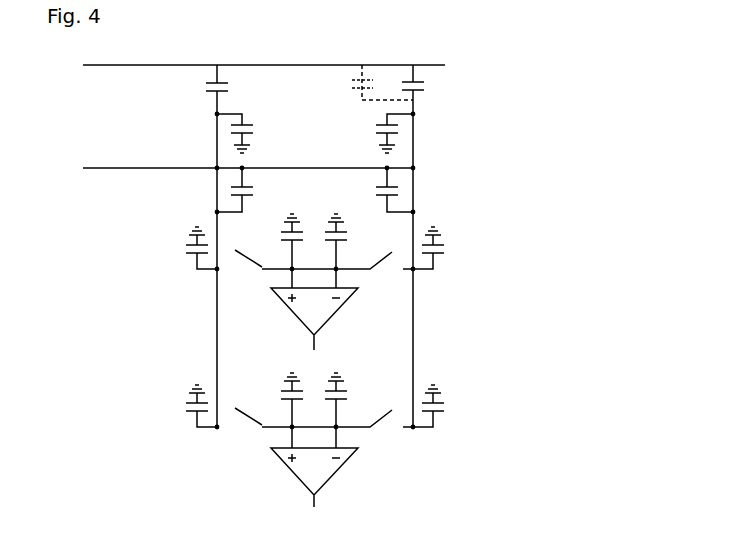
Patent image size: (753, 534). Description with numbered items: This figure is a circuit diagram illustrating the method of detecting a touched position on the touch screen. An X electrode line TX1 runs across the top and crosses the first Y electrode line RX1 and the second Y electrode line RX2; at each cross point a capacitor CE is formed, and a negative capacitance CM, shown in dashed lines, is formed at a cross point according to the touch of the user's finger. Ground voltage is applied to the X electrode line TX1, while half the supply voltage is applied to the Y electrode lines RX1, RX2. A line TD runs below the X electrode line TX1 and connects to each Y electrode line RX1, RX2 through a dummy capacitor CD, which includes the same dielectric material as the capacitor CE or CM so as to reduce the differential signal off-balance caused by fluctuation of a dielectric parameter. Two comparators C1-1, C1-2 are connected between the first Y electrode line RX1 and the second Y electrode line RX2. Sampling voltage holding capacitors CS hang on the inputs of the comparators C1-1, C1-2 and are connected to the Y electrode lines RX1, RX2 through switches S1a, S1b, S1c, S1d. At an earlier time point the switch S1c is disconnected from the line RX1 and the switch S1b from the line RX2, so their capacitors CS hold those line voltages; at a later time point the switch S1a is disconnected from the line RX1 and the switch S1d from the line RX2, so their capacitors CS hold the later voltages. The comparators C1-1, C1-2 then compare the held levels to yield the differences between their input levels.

The first X electrode line TX1 is at (249, 66).
The touch driving line TD is at (233, 168).
The first Y electrode line RX1 is at (203, 247).
The second Y electrode line RX2 is at (430, 247).
The cross-point capacitor CE is at (313, 115).
The negative capacitance CM is at (368, 82).
The dummy capacitor CD is at (315, 189).
The sampling voltage holding capacitor CS is at (313, 331).
The switch S1a is at (262, 268).
The switch S1b is at (374, 269).
The switch S1c is at (262, 426).
The switch S1d is at (374, 427).
The comparator C1-1 is at (323, 317).
The comparator C1-2 is at (332, 478).